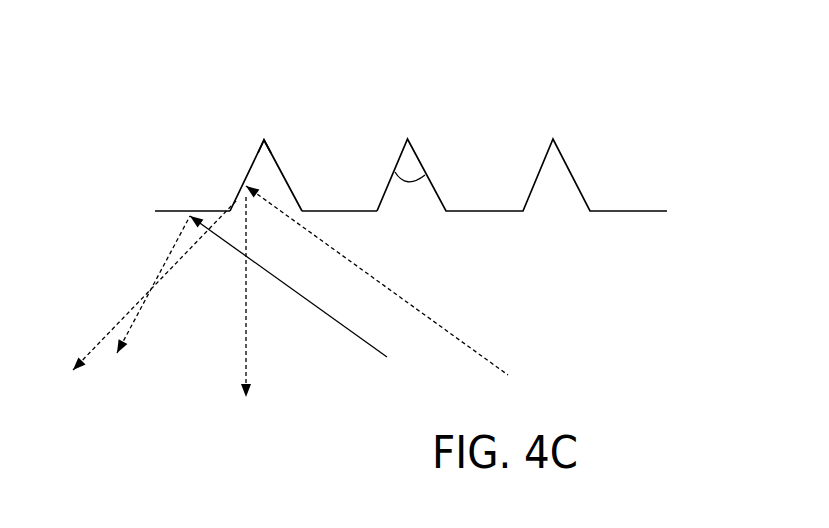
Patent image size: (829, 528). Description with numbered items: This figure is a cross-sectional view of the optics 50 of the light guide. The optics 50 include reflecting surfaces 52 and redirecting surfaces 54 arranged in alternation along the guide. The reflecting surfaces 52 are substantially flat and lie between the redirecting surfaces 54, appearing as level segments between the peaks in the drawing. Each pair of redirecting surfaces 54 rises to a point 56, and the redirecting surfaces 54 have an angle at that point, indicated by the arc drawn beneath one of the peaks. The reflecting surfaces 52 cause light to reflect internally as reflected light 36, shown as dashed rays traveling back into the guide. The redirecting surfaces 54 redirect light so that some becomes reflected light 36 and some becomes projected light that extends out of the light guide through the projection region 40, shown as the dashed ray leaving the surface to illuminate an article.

The optics 50 is at (590, 62).
The reflecting surfaces 52 is at (322, 211).
The redirecting surfaces 54 is at (222, 158).
The point 56 is at (265, 140).
The reflected light 36 is at (187, 273).
The projection region 40 is at (247, 352).